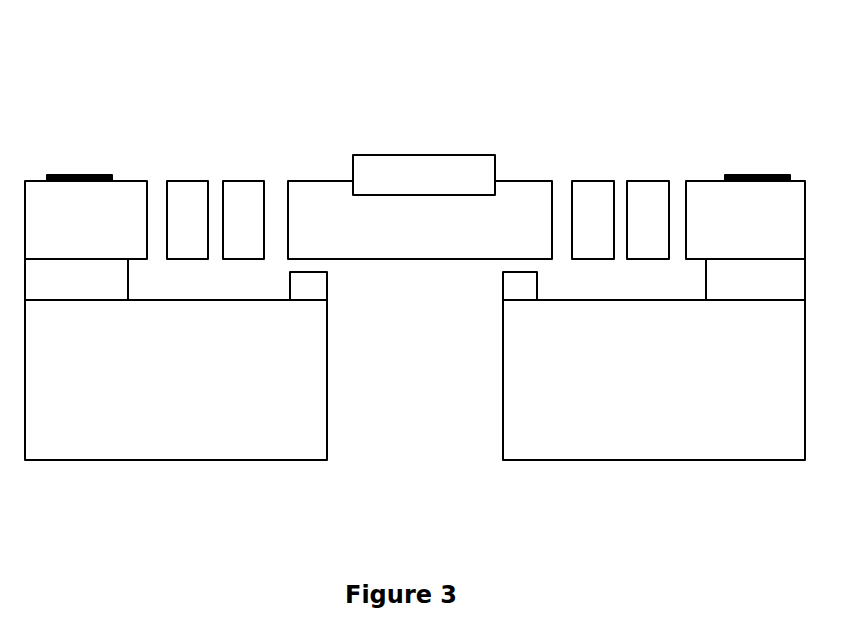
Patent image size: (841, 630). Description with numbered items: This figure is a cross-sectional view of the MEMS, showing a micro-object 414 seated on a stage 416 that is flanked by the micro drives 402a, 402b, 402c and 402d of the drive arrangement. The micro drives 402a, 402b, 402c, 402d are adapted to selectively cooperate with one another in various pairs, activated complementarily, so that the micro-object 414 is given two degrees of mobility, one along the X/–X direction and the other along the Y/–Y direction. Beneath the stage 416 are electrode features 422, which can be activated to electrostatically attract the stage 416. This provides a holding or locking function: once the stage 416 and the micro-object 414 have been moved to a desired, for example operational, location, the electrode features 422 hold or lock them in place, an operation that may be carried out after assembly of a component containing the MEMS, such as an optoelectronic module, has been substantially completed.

The micro drive 402d is at (188, 177).
The micro drive 402c is at (248, 177).
The stage 416 is at (325, 177).
The micro-object 414 is at (410, 173).
The micro drive 402a is at (580, 180).
The micro drive 402b is at (643, 175).
The electrode features 422 is at (510, 288).